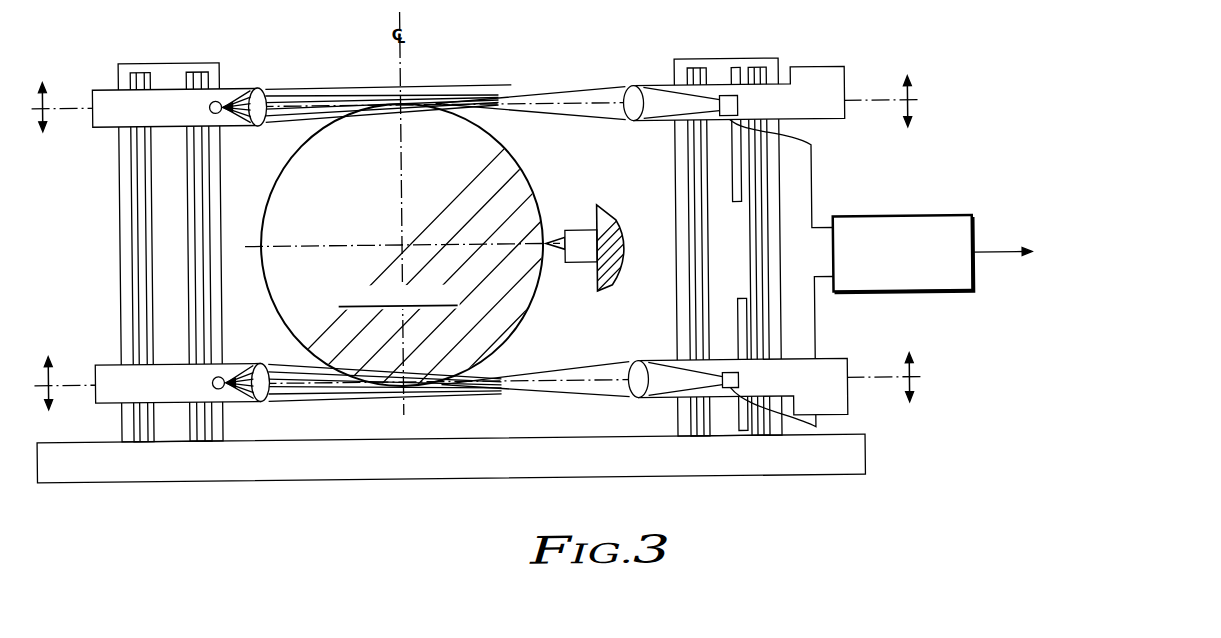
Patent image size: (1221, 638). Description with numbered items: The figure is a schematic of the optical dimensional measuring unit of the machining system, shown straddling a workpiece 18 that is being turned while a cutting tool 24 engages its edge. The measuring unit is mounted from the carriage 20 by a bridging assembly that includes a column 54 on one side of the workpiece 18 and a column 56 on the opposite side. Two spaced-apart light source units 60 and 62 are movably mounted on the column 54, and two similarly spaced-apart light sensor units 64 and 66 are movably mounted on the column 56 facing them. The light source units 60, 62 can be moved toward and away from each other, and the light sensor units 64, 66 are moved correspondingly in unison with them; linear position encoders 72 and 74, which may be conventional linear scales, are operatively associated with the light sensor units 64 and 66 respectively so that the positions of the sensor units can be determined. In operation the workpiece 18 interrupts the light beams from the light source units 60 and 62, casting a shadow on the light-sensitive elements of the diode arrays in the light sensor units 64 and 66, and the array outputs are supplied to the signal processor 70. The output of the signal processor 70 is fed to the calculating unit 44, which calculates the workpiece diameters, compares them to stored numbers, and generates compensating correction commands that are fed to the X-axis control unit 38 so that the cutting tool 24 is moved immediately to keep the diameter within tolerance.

The workpiece 18 is at (523, 184).
The carriage 20 is at (338, 464).
The cutting tool 24 is at (553, 238).
The X-axis control unit 38 is at (120, 223).
The calculating unit 44 is at (1104, 251).
The column 54 is at (121, 145).
The column 56 is at (675, 143).
The light source unit 60 is at (103, 90).
The light source unit 62 is at (102, 367).
The light sensor unit 64 is at (826, 75).
The light sensor unit 66 is at (850, 394).
The signal processing unit 70 is at (963, 204).
The linear position encoder 72 is at (736, 208).
The linear position encoder 74 is at (737, 306).